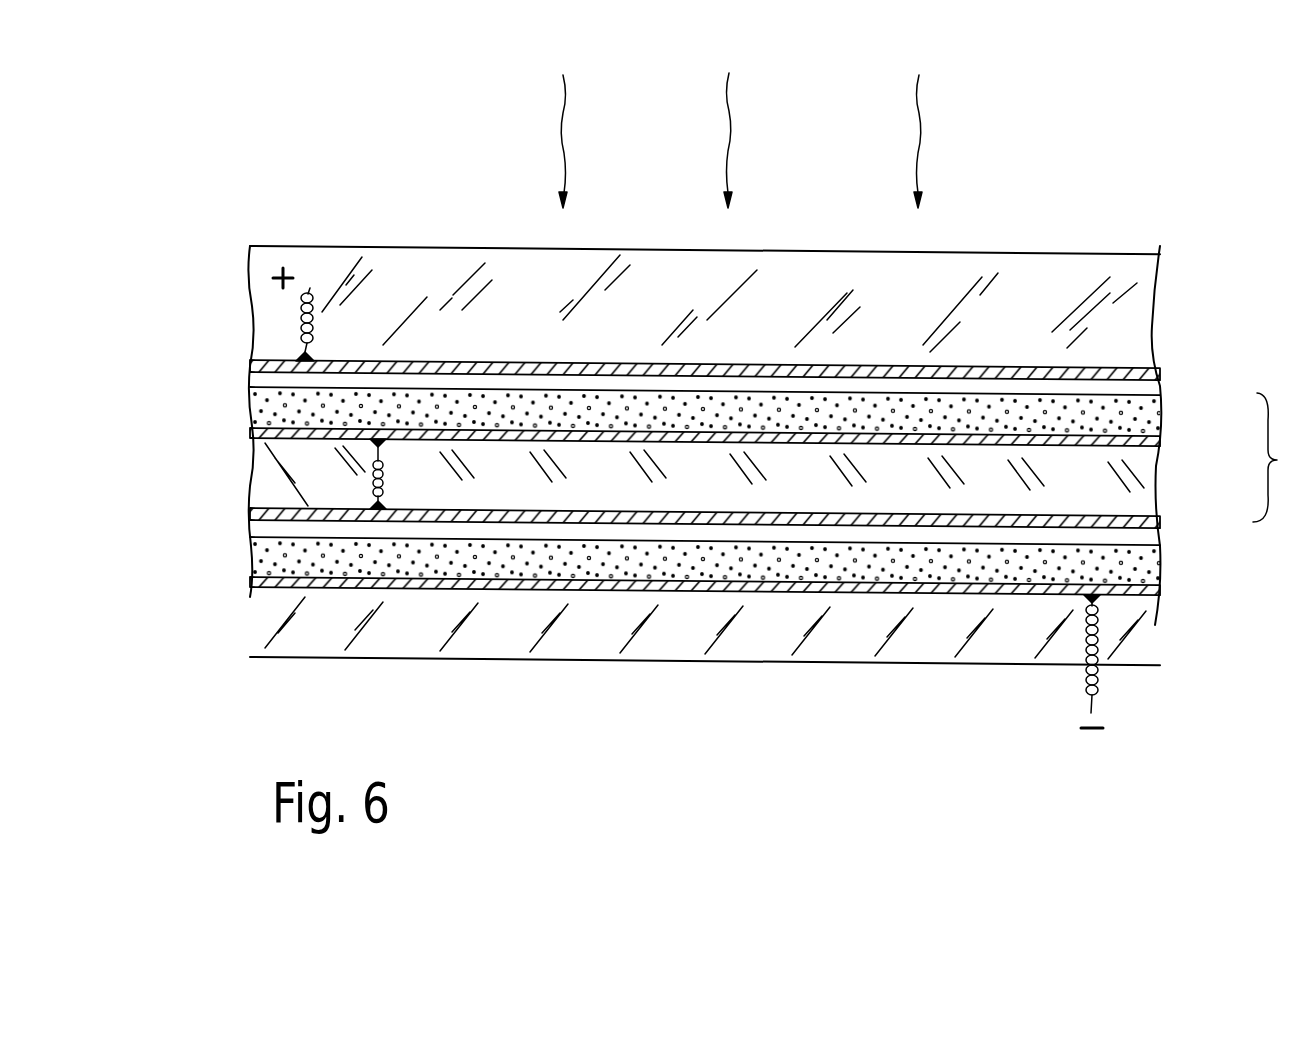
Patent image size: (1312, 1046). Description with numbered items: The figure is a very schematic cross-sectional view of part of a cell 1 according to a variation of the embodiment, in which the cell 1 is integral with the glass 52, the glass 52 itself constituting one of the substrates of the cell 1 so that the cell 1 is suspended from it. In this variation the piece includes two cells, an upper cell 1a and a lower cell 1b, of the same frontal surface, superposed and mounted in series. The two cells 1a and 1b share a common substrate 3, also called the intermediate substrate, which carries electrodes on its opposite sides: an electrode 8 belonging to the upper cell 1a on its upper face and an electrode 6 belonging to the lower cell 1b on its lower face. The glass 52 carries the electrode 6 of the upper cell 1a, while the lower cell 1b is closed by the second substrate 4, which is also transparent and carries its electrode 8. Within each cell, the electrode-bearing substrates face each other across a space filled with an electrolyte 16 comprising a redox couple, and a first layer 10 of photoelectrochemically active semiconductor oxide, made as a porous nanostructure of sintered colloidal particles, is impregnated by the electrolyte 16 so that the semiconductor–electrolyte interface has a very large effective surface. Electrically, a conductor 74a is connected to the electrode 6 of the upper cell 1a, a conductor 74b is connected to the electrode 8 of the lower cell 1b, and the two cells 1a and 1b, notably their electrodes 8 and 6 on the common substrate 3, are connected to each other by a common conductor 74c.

The cell 1 is at (1277, 457).
The upper cell 1a is at (1176, 393).
The lower cell 1b is at (1184, 567).
The common substrate 3 is at (258, 468).
The second substrate 4 is at (507, 625).
The first electrode 6 is at (1147, 375).
The second electrode 8 is at (1162, 443).
The first layer 10 is at (257, 418).
The electrolyte 16 is at (265, 377).
The glass 52 is at (270, 322).
The conductor 74a is at (313, 328).
The conductor 74b is at (1083, 675).
The common conductor 74c is at (365, 478).